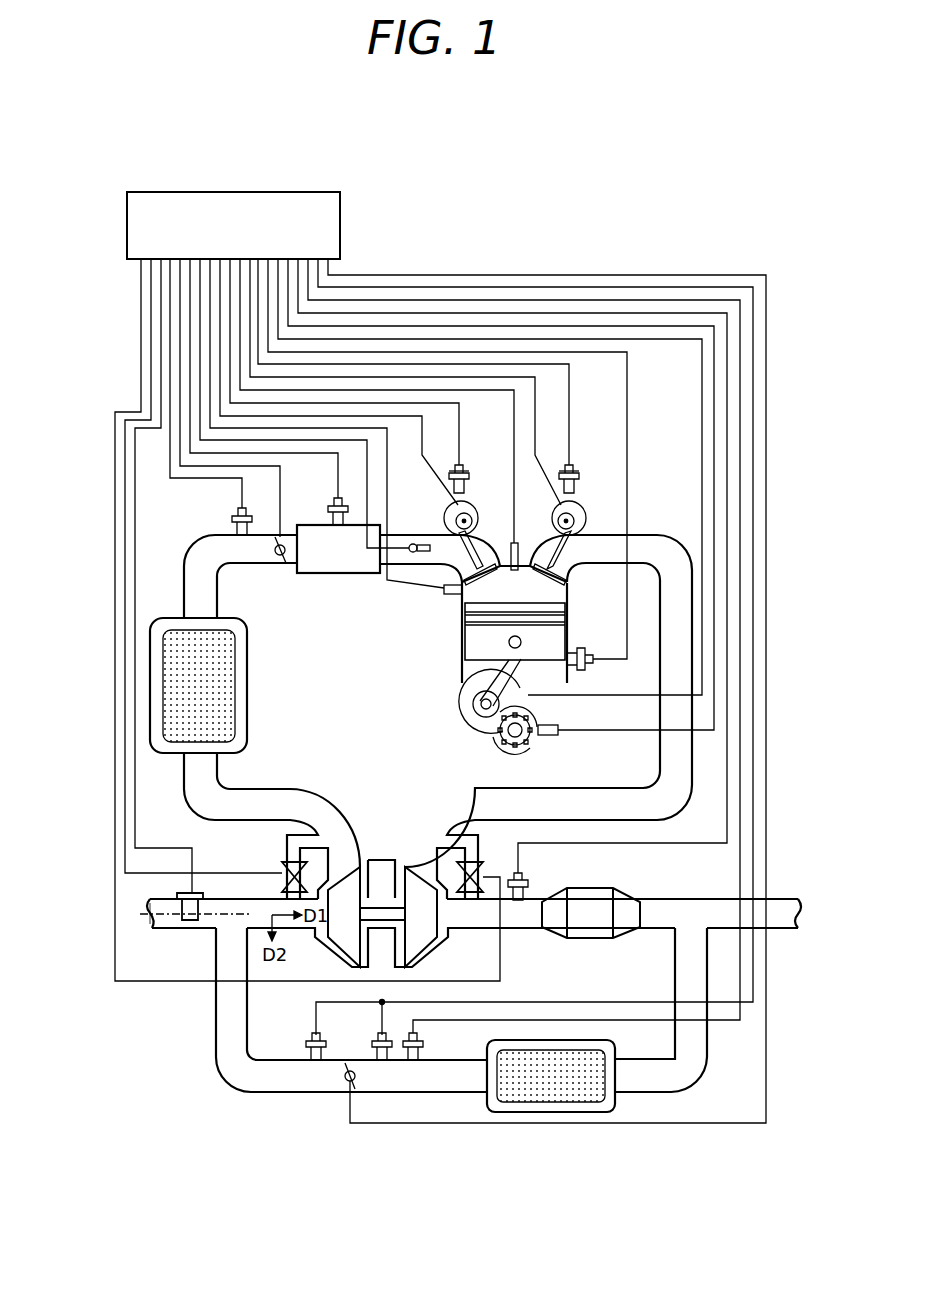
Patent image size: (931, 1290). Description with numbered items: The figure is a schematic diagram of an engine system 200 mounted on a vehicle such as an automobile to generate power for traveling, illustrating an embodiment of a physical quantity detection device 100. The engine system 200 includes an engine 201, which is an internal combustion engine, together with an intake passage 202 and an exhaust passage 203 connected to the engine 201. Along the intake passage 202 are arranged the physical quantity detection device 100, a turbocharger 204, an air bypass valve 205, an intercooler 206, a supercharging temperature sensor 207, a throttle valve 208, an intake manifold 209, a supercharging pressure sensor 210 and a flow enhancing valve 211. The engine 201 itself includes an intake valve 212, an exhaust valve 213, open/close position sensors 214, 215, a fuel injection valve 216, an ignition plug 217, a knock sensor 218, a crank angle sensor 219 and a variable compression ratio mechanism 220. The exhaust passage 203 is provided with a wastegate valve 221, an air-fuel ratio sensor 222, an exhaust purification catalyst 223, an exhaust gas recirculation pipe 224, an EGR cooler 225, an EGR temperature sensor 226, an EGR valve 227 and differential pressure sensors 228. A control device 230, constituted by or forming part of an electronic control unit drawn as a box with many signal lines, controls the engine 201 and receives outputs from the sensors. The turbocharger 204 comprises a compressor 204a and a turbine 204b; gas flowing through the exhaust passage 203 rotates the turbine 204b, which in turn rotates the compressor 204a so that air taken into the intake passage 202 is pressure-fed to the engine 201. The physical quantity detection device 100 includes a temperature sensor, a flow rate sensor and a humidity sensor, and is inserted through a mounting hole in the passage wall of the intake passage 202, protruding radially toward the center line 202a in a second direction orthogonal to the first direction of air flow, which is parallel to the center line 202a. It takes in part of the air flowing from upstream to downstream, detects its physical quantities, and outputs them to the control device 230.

The physical quantity detection device 100 is at (190, 921).
The engine system 200 is at (651, 392).
The engine 201 is at (452, 670).
The intake passage 202 is at (173, 930).
The center line 202a is at (140, 913).
The exhaust passage 203 is at (789, 931).
The turbocharger 204 is at (461, 892).
The compressor 204a is at (357, 865).
The turbine 204b is at (418, 938).
The air bypass valve 205 is at (283, 862).
The intercooler 206 is at (249, 660).
The supercharging temperature sensor 207 is at (236, 514).
The throttle valve 208 is at (276, 562).
The intake manifold 209 is at (331, 574).
The supercharging pressure sensor 210 is at (333, 502).
The flow enhancing valve 211 is at (413, 544).
The intake valve 212 is at (467, 510).
The exhaust valve 213 is at (578, 510).
The open/close position sensor 214 is at (460, 466).
The open/close position sensor 215 is at (571, 466).
The fuel injection valve 216 is at (453, 595).
The ignition plug 217 is at (515, 542).
The knock sensor 218 is at (581, 648).
The crank angle sensor 219 is at (533, 735).
The variable compression ratio mechanism 220 is at (474, 725).
The wastegate valve 221 is at (480, 863).
The air-fuel ratio sensor 222 is at (527, 883).
The exhaust purification catalyst 223 is at (593, 940).
The exhaust gas recirculation pipe 224 is at (700, 1076).
The EGR cooler 225 is at (560, 1113).
The EGR temperature sensor 226 is at (420, 1042).
The EGR valve 227 is at (345, 1068).
The differential pressure sensors 228 is at (379, 1035).
The control device 230 is at (348, 222).